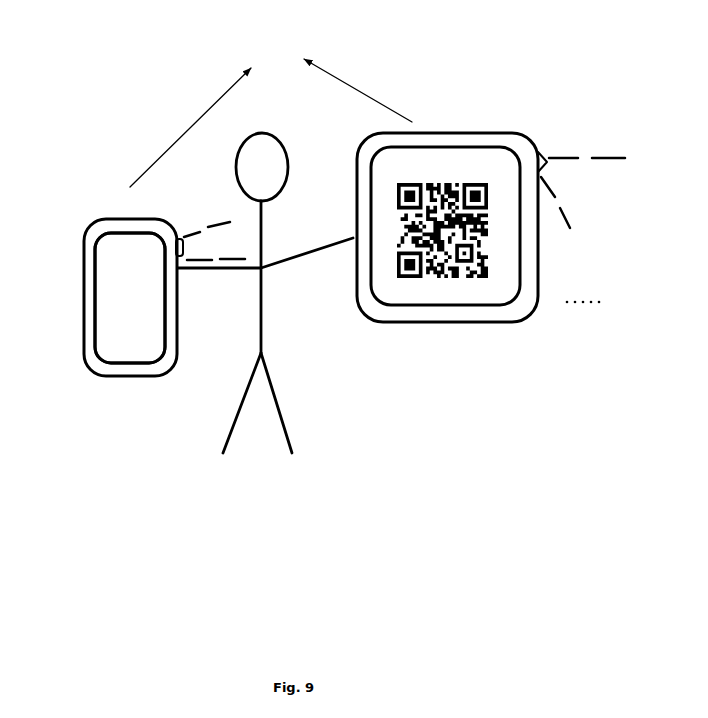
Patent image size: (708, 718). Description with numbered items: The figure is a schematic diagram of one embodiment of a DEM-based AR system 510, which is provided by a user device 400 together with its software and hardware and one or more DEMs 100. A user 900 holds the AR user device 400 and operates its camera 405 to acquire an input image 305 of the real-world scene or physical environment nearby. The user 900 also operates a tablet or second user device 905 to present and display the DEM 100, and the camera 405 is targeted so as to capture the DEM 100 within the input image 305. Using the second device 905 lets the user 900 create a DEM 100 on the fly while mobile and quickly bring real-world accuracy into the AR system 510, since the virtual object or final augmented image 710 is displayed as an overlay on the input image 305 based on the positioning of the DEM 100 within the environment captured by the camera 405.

The DEM 100 is at (447, 289).
The input image 305 is at (114, 271).
The final augmented image 710 is at (96, 288).
The user device 400 is at (102, 327).
The camera 405 is at (182, 229).
The DEM-based AR system 510 is at (271, 108).
The user 900 is at (261, 423).
The tablet 905 is at (491, 262).